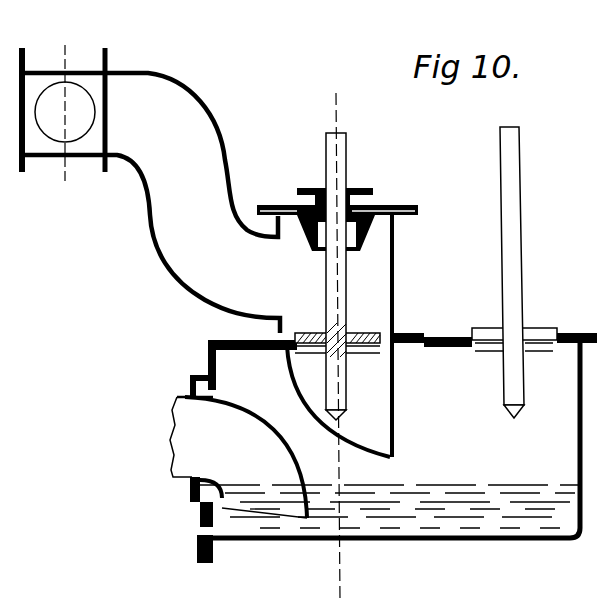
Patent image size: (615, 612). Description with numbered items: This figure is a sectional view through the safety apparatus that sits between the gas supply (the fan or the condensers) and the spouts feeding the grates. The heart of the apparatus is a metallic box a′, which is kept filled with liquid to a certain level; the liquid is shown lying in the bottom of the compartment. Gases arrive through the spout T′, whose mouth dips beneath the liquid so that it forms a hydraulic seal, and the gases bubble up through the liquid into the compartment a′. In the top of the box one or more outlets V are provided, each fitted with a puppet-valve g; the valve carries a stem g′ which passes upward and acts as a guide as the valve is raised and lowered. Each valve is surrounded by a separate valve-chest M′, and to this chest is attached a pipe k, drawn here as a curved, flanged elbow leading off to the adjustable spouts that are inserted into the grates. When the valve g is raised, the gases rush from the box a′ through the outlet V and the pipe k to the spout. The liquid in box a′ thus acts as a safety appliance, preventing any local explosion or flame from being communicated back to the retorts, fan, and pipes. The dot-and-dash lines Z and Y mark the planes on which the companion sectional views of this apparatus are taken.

The pipe k is at (151, 190).
The section line z z Z is at (65, 111).
The section line y y Y is at (357, 352).
The valve-chest M′ is at (337, 236).
The valve stem g′ is at (433, 273).
The puppet-valve g is at (355, 342).
The outlet V is at (424, 360).
The metallic box a′ is at (387, 376).
The spout T′ is at (238, 480).